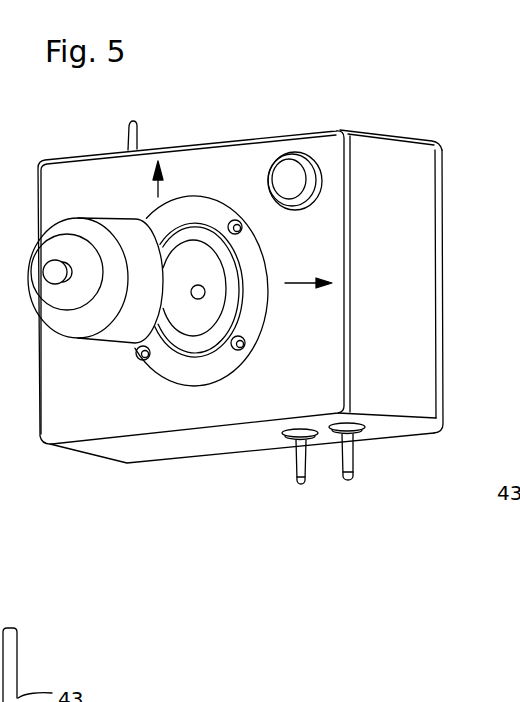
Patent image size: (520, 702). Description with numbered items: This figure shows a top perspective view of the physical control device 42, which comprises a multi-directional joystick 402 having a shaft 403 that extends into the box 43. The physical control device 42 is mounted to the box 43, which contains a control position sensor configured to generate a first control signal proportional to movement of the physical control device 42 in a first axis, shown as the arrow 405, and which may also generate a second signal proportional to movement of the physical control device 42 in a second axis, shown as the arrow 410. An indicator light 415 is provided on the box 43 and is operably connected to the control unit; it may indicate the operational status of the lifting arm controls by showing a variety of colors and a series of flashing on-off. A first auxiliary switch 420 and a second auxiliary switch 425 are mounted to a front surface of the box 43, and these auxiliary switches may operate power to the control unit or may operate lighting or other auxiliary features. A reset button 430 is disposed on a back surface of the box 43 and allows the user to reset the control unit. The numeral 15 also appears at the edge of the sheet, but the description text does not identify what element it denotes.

The housing 43 is at (444, 280).
The pin / indicator 430 is at (138, 124).
The upward direction arrow 405 is at (152, 196).
The knob 402 is at (112, 217).
The mounting flange 42 is at (93, 357).
The center hole of flange 403 is at (203, 290).
The button 415 is at (266, 195).
The rightward direction arrow 410 is at (295, 290).
The first pin 420 is at (292, 445).
The second pin 425 is at (357, 443).
The neighbouring figure element 15 is at (12, 635).